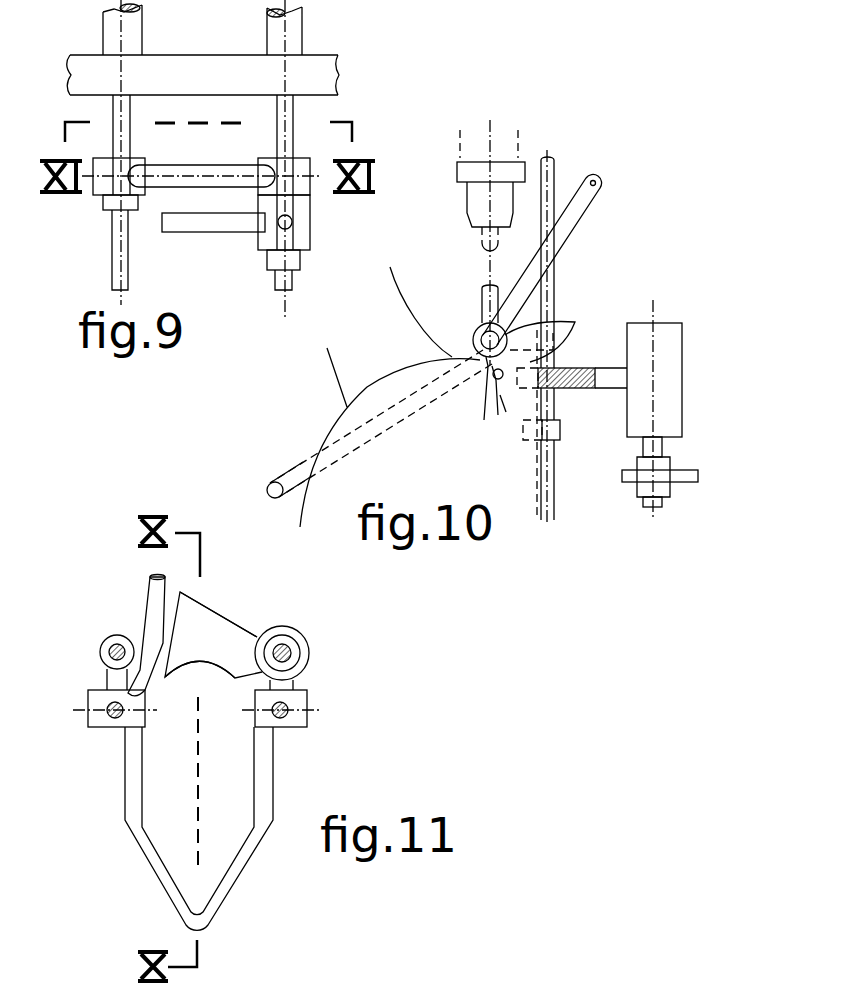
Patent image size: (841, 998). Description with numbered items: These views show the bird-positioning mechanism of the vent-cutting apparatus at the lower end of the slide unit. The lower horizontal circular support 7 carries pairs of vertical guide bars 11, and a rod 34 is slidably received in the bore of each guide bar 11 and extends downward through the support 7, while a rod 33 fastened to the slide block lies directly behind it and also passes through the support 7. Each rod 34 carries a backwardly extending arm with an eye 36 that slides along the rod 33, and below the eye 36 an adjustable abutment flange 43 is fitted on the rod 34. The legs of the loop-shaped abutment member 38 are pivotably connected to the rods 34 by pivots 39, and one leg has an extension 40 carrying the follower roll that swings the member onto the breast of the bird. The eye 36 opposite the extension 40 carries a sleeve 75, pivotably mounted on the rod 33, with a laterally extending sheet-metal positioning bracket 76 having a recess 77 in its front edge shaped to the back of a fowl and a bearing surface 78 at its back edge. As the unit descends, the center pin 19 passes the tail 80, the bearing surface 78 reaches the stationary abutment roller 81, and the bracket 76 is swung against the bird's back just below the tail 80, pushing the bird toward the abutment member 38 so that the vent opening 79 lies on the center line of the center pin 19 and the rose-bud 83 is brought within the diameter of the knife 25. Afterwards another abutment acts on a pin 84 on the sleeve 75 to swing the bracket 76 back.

In FIG. 9, the horizontal circular support 7 is at (340, 77).
In FIG. 9, the guide bar 11 is at (295, 33).
In FIG. 10, the center pin 19 is at (480, 243).
In FIG. 10, the knife 25 is at (470, 197).
In FIG. 9, the rod 33 is at (118, 267).
In FIG. 10, the rod 33 is at (552, 274).
In FIG. 11, the rod 33 is at (288, 647).
In FIG. 9, the rod 34 is at (293, 137).
In FIG. 10, the rod 34 is at (485, 300).
In FIG. 11, the rod 34 is at (283, 720).
In FIG. 11, the eye 36 is at (103, 652).
In FIG. 9, the loop-shaped abutment member 38 is at (210, 172).
In FIG. 11, the loop-shaped abutment member 38 is at (134, 788).
In FIG. 11, the pivot 39 is at (307, 707).
In FIG. 10, the extension 40 is at (565, 215).
In FIG. 11, the extension 40 is at (152, 612).
In FIG. 9, the adjustable abutment flange 43 is at (110, 203).
In FIG. 10, the adjustable abutment flange 43 is at (558, 428).
In FIG. 9, the sleeve 75 is at (300, 209).
In FIG. 11, the sleeve 75 is at (300, 662).
In FIG. 9, the positioning bracket 76 is at (183, 225).
In FIG. 11, the positioning bracket 76 is at (202, 632).
In FIG. 11, the recess 77 is at (213, 667).
In FIG. 11, the bearing surface 78 is at (200, 602).
In FIG. 10, the vent opening 79 is at (482, 387).
In FIG. 10, the tail 80 is at (562, 315).
In FIG. 10, the stationary abutment roller 81 is at (642, 333).
In FIG. 10, the rose-bud 83 is at (507, 400).
In FIG. 9, the pin 84 is at (290, 222).